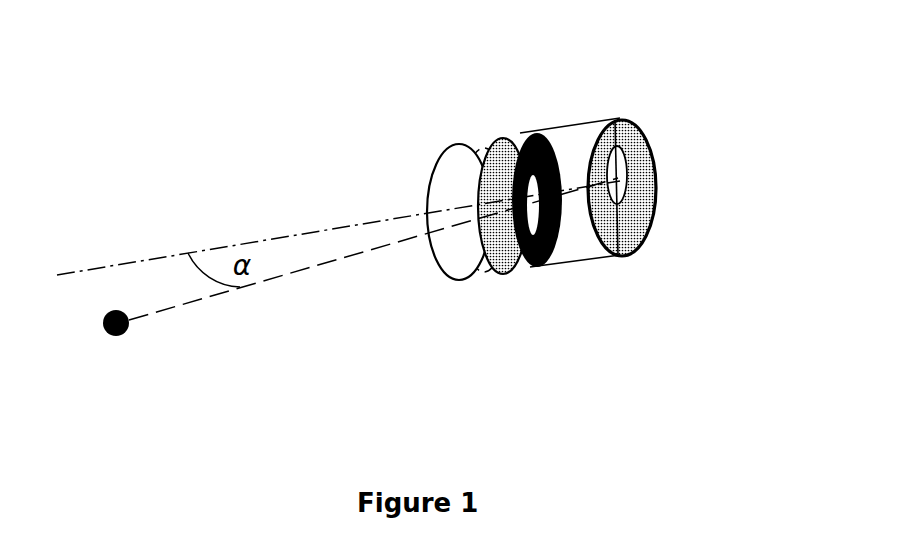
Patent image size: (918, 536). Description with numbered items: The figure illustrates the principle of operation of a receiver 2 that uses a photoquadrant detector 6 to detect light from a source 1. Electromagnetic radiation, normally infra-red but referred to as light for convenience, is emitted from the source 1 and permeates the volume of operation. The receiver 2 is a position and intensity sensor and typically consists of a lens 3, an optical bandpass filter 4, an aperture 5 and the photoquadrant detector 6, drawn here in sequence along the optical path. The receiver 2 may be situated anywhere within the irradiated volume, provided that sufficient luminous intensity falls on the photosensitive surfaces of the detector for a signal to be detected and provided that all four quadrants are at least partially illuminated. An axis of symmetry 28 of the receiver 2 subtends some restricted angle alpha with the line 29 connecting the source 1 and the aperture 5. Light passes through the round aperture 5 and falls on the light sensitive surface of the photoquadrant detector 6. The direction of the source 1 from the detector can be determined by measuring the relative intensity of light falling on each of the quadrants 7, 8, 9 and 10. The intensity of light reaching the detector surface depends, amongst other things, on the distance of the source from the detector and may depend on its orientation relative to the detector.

The source 1 is at (110, 335).
The receiver 2 is at (565, 127).
The lens 3 is at (462, 258).
The optical bandpass filter 4 is at (507, 255).
The aperture 5 is at (548, 255).
The photoquadrant detector 6 is at (635, 245).
The quadrant 7 is at (642, 165).
The quadrant 8 is at (674, 194).
The quadrant 9 is at (606, 213).
The quadrant 10 is at (615, 120).
The axis of symmetry 28 is at (302, 235).
The line 29 is at (202, 298).